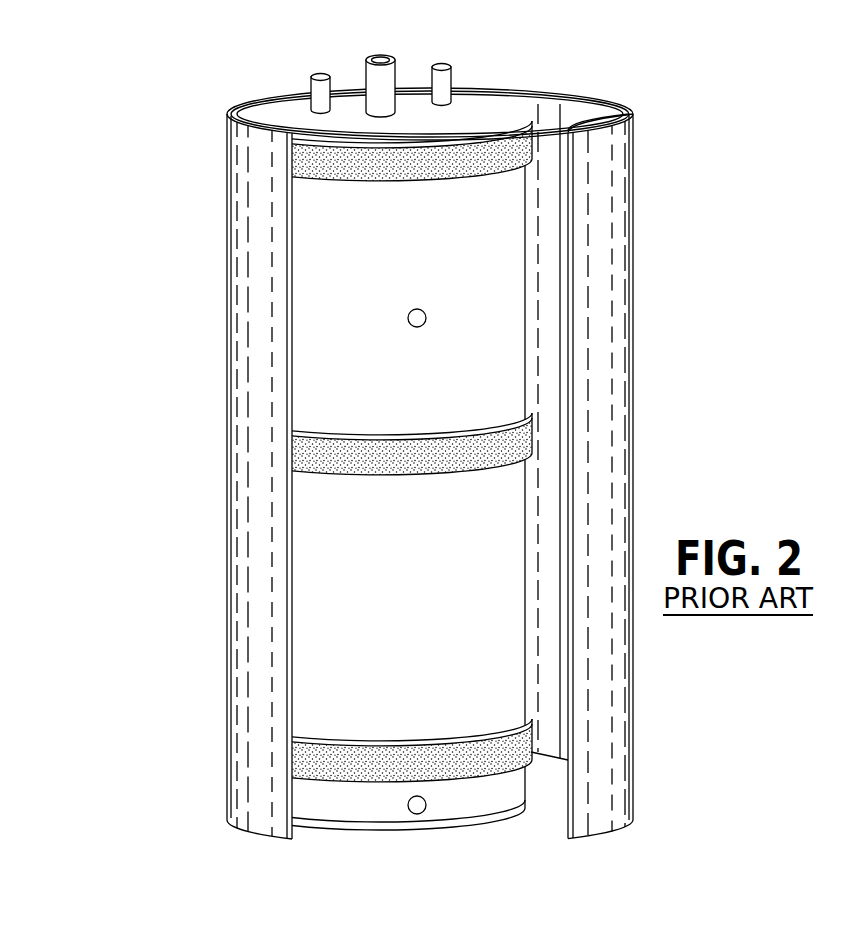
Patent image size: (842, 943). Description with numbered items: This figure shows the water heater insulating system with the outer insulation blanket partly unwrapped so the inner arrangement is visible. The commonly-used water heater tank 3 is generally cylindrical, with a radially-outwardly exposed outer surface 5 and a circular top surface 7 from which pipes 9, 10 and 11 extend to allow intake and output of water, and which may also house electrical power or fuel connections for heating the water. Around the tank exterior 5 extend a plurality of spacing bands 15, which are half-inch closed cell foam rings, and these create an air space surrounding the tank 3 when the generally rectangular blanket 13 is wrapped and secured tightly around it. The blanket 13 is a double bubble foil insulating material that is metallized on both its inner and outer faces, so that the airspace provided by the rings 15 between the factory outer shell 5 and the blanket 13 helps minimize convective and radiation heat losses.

The water heater tank 3 is at (513, 110).
The outer surface 5 is at (500, 256).
The top surface 7 is at (272, 108).
The pipe 9 is at (321, 73).
The pipe 10 is at (381, 57).
The pipe 11 is at (439, 66).
The blanket 13 is at (618, 204).
The spacing bands 15 is at (310, 160).